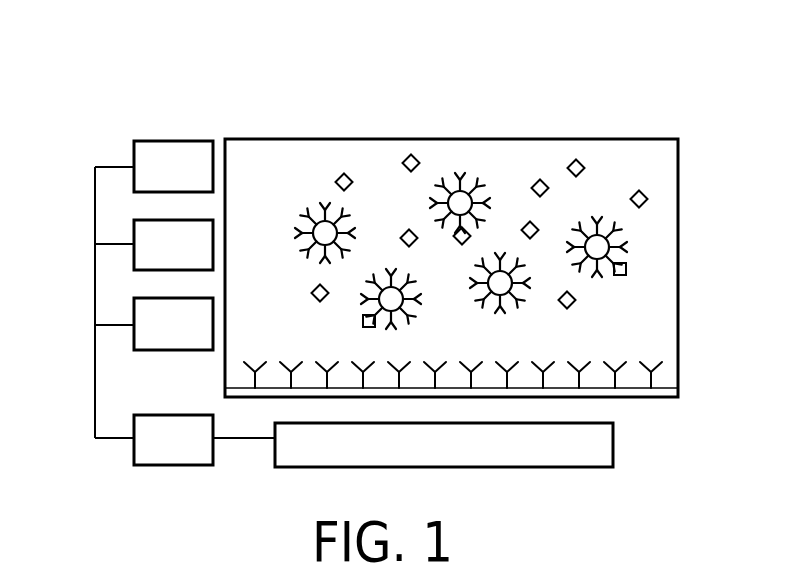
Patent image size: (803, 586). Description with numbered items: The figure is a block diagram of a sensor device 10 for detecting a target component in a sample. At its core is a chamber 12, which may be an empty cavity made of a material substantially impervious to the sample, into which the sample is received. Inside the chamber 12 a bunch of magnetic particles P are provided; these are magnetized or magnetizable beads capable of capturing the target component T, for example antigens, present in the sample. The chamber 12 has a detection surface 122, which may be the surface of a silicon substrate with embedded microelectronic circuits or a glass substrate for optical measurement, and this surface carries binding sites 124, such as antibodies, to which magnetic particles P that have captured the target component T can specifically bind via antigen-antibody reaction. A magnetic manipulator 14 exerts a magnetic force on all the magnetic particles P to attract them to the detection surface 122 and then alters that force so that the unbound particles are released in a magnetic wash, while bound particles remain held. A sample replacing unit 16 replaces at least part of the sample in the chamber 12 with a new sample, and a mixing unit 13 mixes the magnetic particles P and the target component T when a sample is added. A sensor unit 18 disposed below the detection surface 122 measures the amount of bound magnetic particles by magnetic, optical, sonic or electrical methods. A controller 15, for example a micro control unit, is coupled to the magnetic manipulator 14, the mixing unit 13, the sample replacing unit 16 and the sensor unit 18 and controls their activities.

The sensor device 10 is at (80, 84).
The chamber 12 is at (266, 172).
The mixing unit 13 is at (188, 337).
The magnetic manipulator 14 is at (188, 180).
The controller 15 is at (188, 453).
The sample replacing unit 16 is at (188, 258).
The sensor unit 18 is at (458, 456).
The detection surface 122 is at (578, 380).
The binding sites 124 is at (610, 368).
The target component T is at (580, 167).
The magnetic particles P is at (623, 247).